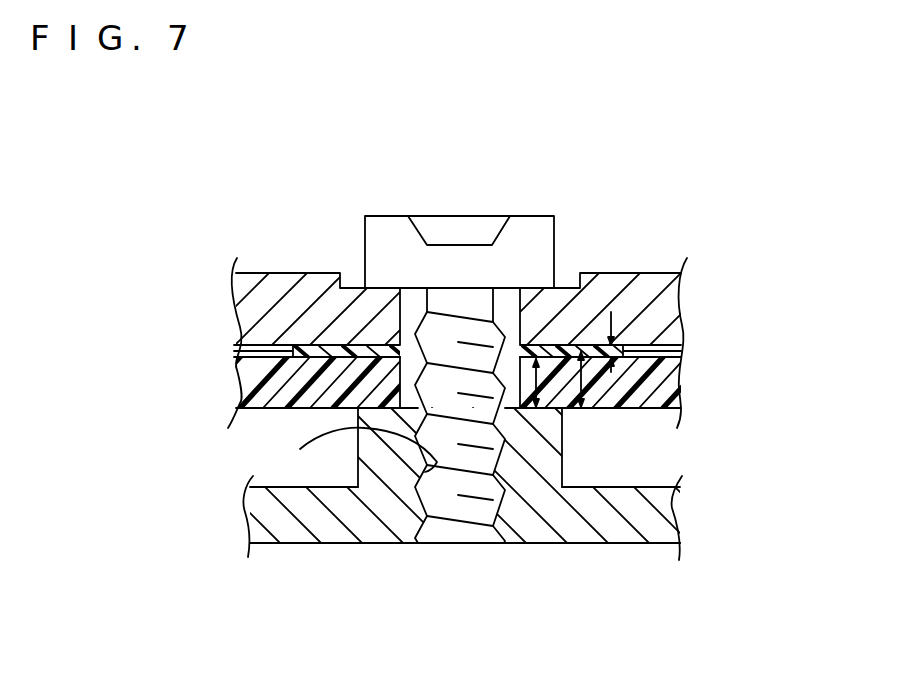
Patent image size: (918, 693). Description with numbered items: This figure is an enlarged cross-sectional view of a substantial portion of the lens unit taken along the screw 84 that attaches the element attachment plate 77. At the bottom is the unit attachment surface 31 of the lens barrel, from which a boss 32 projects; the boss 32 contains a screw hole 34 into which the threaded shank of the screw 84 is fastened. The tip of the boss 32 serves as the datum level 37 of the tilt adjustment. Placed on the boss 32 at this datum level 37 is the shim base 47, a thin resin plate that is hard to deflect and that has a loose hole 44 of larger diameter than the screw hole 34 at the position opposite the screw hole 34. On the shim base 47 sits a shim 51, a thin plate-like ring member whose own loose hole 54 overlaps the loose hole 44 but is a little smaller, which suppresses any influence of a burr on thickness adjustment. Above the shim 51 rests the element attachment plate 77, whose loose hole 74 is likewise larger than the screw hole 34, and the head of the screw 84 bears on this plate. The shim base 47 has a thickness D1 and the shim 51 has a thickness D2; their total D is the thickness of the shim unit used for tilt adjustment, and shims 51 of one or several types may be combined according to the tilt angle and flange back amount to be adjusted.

The screw 84 is at (528, 234).
The element attachment plate 77 is at (308, 281).
The loose hole 74 is at (398, 325).
The loose hole 54 is at (398, 351).
The shim 51 is at (310, 351).
The loose hole 44 is at (310, 381).
The shim base 47 is at (262, 398).
The datum level 37 is at (327, 408).
The screw hole 34 is at (373, 463).
The boss 32 is at (248, 472).
The unit attachment surface 31 is at (329, 528).
The thickness of the shim D2 is at (682, 352).
The thickness of the shim base D1 is at (540, 386).
The total thickness of the shim unit D is at (583, 383).